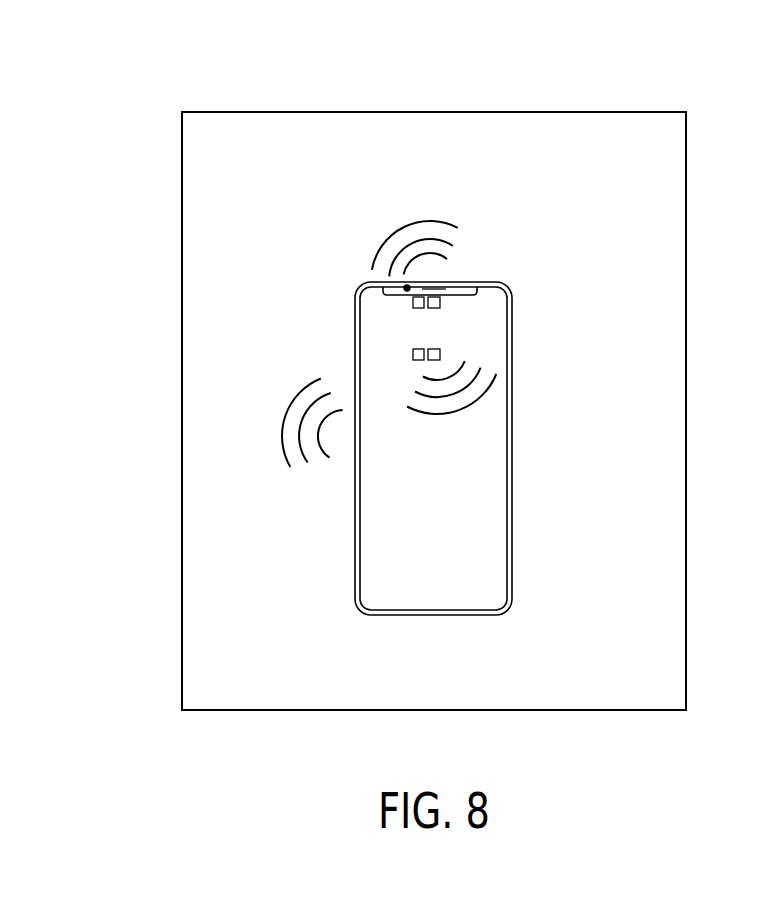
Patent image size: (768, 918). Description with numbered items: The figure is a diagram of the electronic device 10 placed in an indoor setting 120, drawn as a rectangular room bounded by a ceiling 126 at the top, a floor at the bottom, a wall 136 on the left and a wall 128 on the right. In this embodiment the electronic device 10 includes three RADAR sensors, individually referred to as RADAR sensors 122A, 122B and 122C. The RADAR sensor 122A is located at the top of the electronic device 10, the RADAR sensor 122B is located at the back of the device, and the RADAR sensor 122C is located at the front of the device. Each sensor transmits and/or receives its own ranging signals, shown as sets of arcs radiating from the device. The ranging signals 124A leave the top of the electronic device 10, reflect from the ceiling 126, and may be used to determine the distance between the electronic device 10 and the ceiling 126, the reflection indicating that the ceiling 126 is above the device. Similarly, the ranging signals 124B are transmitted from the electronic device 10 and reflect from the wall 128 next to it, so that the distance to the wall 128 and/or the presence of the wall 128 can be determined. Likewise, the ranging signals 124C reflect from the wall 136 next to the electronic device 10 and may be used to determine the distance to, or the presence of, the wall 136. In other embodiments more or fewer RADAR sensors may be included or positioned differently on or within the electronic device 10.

The electronic device 10 is at (506, 606).
The indoor setting 120 is at (243, 745).
The RADAR sensor 122A is at (440, 302).
The RADAR sensor 122B is at (440, 352).
The RADAR sensor 122C is at (360, 478).
The ranging signals 124A is at (432, 220).
The ranging signals 124B is at (492, 386).
The ranging signals 124C is at (316, 382).
The ceiling 126 is at (532, 112).
The wall 128 is at (688, 472).
The wall 136 is at (182, 472).